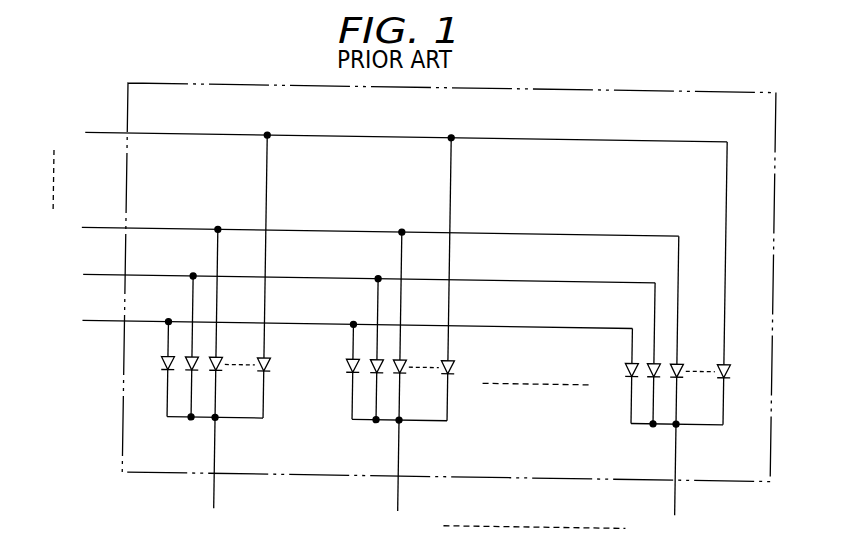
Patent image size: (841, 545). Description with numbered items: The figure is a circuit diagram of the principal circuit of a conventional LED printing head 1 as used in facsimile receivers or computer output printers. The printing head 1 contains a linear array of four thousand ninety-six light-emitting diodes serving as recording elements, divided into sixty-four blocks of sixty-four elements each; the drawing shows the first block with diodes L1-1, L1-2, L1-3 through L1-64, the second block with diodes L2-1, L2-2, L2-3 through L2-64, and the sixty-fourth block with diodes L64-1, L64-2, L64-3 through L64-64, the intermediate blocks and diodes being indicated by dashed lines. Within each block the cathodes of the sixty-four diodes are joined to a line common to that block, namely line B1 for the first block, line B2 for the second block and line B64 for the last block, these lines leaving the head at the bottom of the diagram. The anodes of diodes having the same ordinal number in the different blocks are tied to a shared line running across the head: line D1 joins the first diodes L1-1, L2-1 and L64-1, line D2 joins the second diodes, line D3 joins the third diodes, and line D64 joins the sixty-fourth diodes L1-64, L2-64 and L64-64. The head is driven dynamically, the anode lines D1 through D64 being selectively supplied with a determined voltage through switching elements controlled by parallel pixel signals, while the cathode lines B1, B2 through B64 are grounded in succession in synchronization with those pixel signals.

The printing head 1 is at (715, 83).
The common anode line D64 is at (381, 242).
The common anode line D3 is at (357, 290).
The common anode line D2 is at (345, 313).
The common anode line D1 is at (334, 336).
The common cathode line B1 is at (216, 477).
The common cathode line B2 is at (398, 479).
The common cathode line B64 is at (678, 484).
The light-emitting diode L1-1 is at (172, 403).
The light-emitting diode L1-2 is at (196, 403).
The light-emitting diode L1-3 is at (220, 403).
The light-emitting diode L1-64 is at (267, 403).
The light-emitting diode L2-1 is at (357, 403).
The light-emitting diode L2-2 is at (381, 403).
The light-emitting diode L2-3 is at (404, 403).
The light-emitting diode L2-64 is at (451, 403).
The light-emitting diode L64-1 is at (636, 403).
The light-emitting diode L64-2 is at (658, 403).
The light-emitting diode L64-3 is at (681, 403).
The light-emitting diode L64-64 is at (727, 403).